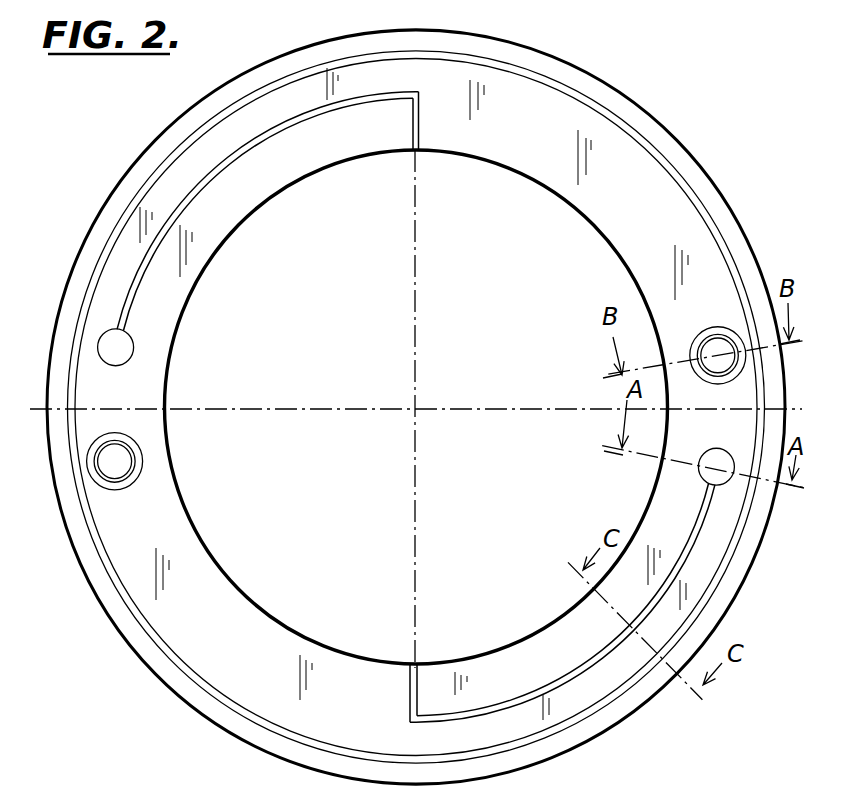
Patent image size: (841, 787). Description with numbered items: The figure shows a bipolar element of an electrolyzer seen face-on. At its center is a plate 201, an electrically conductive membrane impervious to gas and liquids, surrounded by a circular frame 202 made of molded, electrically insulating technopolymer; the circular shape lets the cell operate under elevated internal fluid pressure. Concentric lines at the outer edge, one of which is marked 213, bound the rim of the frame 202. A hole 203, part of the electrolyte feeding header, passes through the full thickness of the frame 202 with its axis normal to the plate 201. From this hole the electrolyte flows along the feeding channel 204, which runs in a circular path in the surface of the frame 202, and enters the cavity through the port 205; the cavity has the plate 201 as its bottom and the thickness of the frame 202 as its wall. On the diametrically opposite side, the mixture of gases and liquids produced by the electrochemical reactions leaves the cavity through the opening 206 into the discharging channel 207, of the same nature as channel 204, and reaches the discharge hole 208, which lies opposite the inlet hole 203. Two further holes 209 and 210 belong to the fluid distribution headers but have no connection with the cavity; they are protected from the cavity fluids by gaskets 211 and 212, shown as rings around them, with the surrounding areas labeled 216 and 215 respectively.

The plate 201 is at (473, 183).
The frame 202 is at (648, 180).
The outer rim 213 is at (603, 108).
The hole 203 is at (722, 476).
The feeding channel 204 is at (583, 668).
The port 205 is at (414, 666).
The opening 206 is at (413, 151).
The discharging channel 207 is at (210, 170).
The discharge hole 208 is at (130, 340).
The hole 209 is at (120, 460).
The hole 210 is at (718, 353).
The gasket 211 is at (204, 478).
The gasket 212 is at (643, 310).
The counterbore 215 is at (698, 341).
The counterbore 216 is at (138, 473).